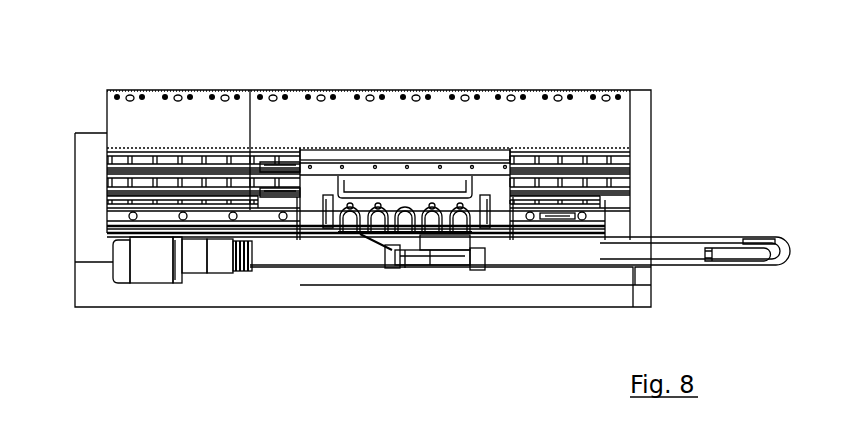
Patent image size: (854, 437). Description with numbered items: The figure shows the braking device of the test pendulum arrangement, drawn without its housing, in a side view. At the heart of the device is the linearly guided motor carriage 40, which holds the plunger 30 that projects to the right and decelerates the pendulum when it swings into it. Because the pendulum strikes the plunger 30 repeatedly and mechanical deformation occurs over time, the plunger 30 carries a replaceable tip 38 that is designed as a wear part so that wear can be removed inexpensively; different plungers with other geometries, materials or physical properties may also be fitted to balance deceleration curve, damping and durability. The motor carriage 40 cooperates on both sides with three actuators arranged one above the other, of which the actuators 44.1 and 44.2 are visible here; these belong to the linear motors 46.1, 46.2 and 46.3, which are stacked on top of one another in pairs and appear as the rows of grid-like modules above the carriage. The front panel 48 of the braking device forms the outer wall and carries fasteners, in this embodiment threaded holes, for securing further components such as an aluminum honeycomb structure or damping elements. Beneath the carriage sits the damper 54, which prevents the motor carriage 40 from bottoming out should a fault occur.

The plunger 30 is at (666, 253).
The replaceable tip 38 is at (753, 246).
The motor carriage 40 is at (378, 185).
The actuator 44.1 is at (290, 172).
The actuator 44.2 is at (277, 198).
The linear motor 46.1 is at (190, 110).
The linear motor 46.2 is at (168, 185).
The linear motor 46.3 is at (125, 203).
The front panel 48 is at (640, 110).
The damper 54 is at (197, 255).